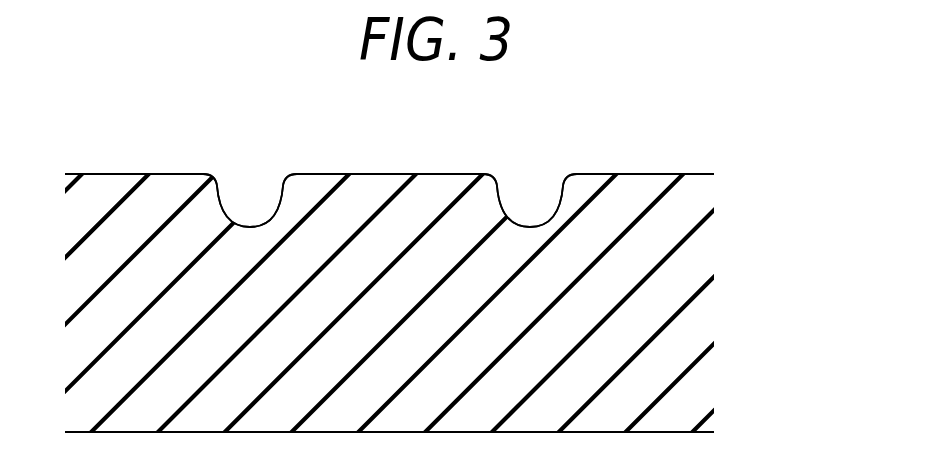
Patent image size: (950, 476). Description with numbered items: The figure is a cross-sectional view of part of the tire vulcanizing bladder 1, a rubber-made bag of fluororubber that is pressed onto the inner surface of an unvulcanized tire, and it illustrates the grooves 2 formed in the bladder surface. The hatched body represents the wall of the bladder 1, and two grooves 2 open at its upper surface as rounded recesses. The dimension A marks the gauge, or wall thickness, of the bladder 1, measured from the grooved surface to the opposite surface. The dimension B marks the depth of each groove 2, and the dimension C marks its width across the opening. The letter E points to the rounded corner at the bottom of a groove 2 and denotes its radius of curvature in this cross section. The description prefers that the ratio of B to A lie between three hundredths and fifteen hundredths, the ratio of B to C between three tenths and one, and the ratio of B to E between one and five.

The tire vulcanizing bladder 1 is at (384, 166).
The groove 2 is at (246, 185).
The gauge of the tire vulcanizing bladder A is at (718, 174).
The depth of the groove B is at (553, 227).
The width of the groove C is at (567, 130).
The radius of curvature of a corner of a bottom of the groove E is at (522, 216).